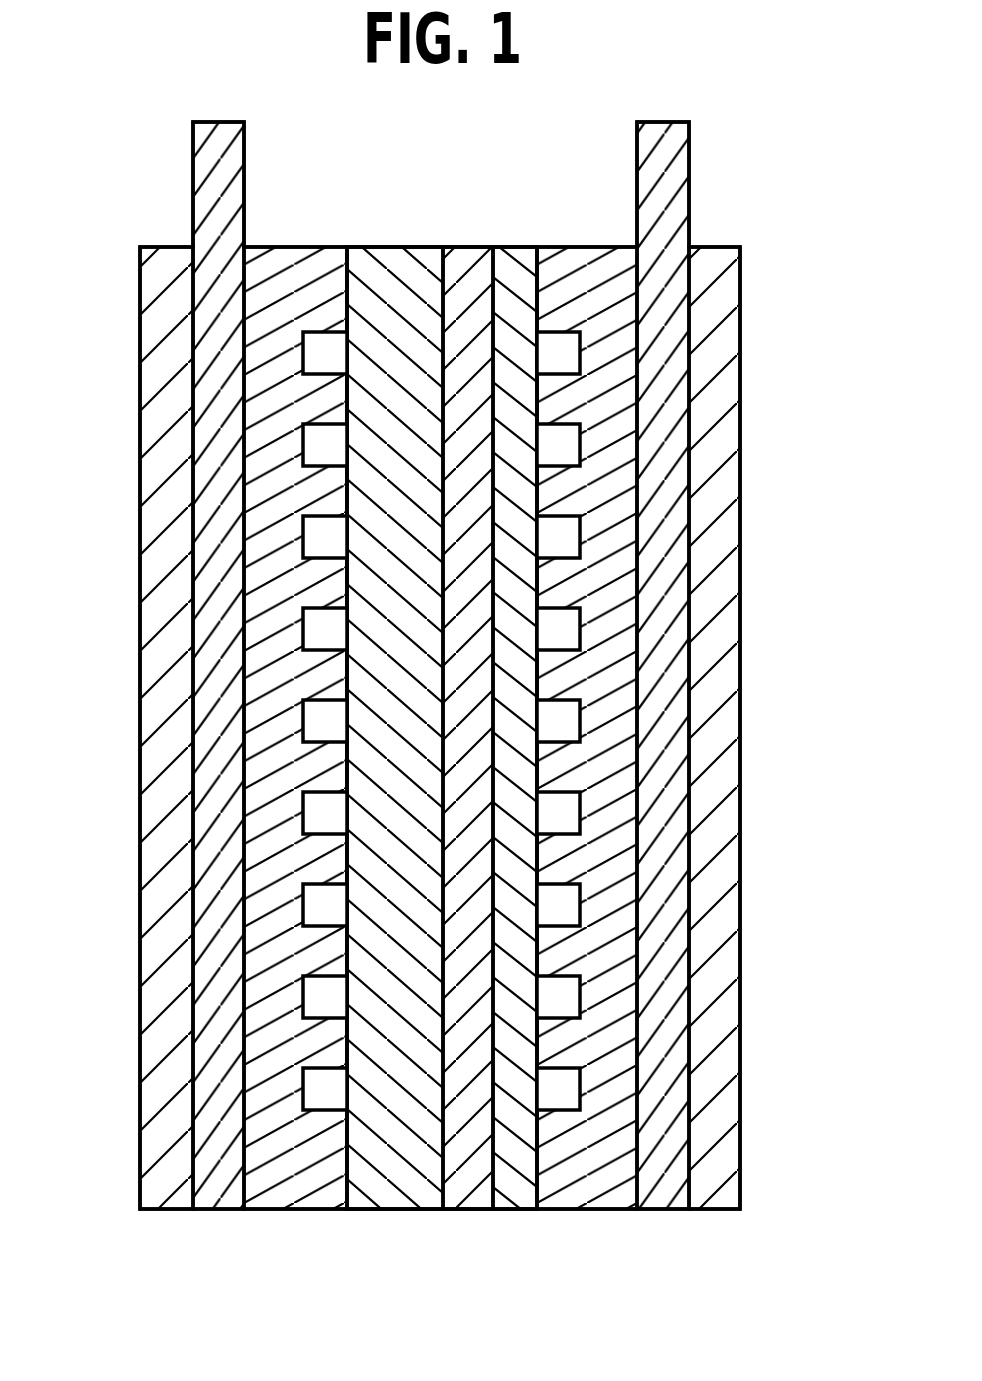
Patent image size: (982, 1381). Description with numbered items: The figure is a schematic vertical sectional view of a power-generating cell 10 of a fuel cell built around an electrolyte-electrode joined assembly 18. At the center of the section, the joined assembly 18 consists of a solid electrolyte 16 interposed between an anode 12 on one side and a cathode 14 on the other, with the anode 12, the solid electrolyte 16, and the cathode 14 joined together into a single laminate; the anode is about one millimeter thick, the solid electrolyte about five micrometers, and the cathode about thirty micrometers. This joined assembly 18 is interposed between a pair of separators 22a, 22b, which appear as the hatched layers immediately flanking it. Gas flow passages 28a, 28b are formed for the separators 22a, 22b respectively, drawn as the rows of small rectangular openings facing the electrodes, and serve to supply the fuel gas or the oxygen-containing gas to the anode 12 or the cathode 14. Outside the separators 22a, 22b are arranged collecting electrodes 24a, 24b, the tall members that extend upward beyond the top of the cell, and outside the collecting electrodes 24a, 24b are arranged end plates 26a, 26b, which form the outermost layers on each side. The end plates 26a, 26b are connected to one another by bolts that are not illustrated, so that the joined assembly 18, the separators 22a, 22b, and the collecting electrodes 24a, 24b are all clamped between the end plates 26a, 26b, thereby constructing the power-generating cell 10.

The power-generating cell 10 is at (127, 112).
The anode 12 is at (403, 1195).
The cathode 14 is at (515, 769).
The solid electrolyte 16 is at (467, 1192).
The electrolyte-electrode joined assembly 18 is at (442, 805).
The separator 22a is at (289, 292).
The separator 22b is at (593, 292).
The collecting electrode 24a is at (216, 205).
The collecting electrode 24b is at (672, 205).
The end plate 26a is at (163, 505).
The end plate 26b is at (718, 533).
The gas flow passage 28a is at (326, 352).
The gas flow passage 28b is at (560, 355).